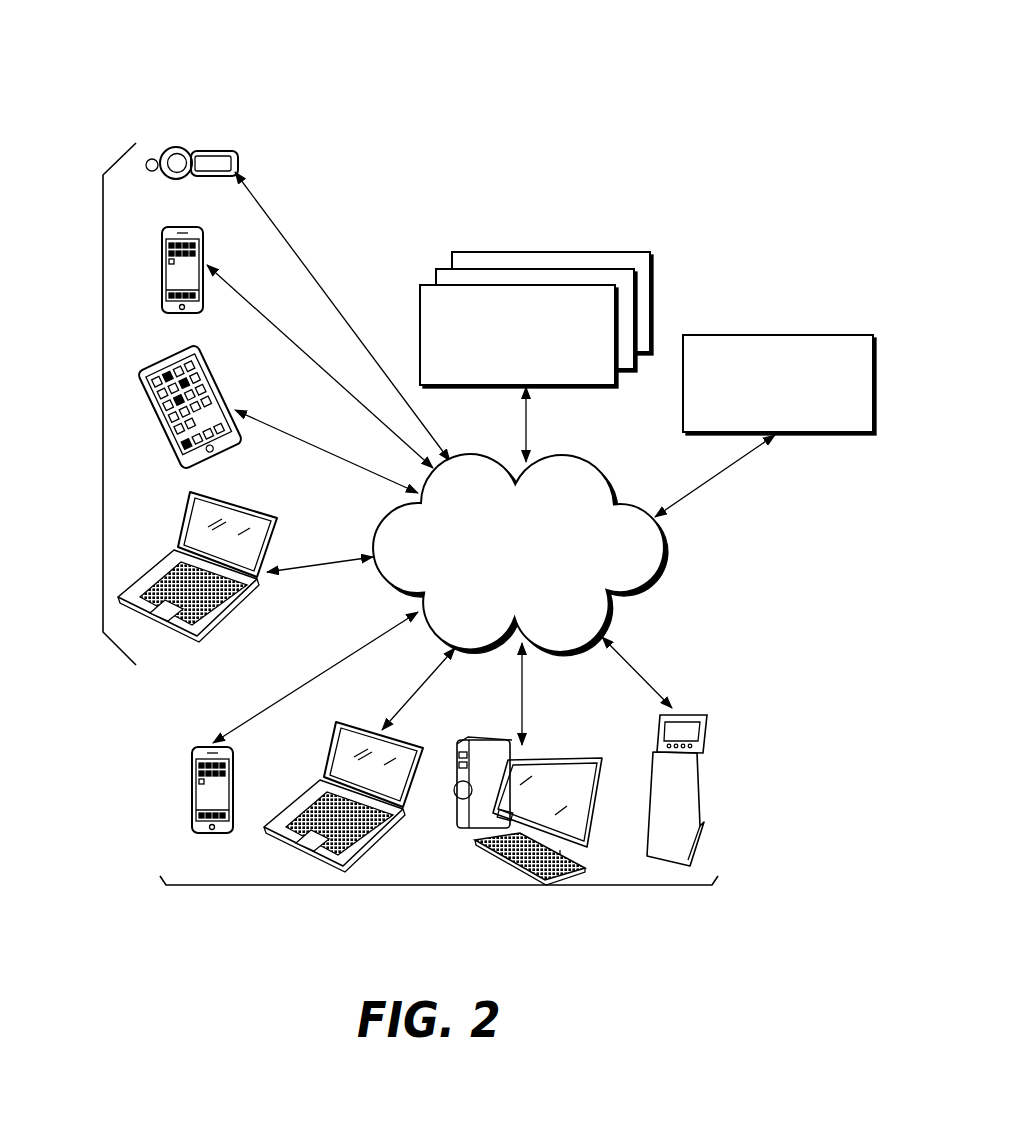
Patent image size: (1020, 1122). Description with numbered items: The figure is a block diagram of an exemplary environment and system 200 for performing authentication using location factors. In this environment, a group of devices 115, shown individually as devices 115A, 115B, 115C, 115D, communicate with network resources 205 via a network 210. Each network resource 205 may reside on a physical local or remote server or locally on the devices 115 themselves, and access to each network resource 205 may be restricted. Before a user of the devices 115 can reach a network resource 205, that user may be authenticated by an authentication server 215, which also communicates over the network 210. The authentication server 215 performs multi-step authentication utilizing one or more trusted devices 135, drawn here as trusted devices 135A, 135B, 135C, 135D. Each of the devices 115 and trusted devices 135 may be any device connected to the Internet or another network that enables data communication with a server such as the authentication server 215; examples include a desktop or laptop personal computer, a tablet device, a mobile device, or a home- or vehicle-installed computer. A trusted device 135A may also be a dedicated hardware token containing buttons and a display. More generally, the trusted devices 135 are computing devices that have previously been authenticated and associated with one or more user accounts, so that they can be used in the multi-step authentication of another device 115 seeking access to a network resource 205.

The environment and system 200 is at (746, 66).
The trusted devices 135 is at (103, 380).
The trusted device 135A is at (240, 160).
The trusted device 135B is at (203, 244).
The trusted device 135C is at (211, 366).
The trusted device 135D is at (188, 518).
The network resource 205 is at (504, 369).
The network 210 is at (506, 577).
The authentication server 215 is at (765, 417).
The devices 115 is at (455, 885).
The device 115A is at (193, 796).
The device 115B is at (332, 745).
The device 115C is at (560, 758).
The device 115D is at (707, 738).